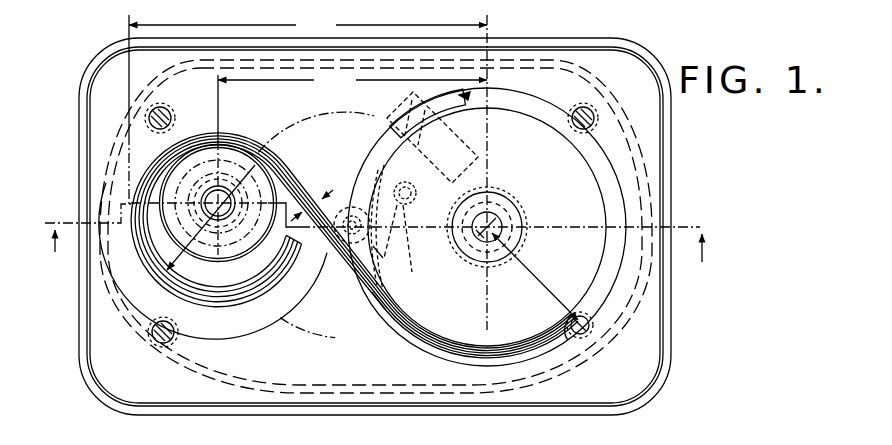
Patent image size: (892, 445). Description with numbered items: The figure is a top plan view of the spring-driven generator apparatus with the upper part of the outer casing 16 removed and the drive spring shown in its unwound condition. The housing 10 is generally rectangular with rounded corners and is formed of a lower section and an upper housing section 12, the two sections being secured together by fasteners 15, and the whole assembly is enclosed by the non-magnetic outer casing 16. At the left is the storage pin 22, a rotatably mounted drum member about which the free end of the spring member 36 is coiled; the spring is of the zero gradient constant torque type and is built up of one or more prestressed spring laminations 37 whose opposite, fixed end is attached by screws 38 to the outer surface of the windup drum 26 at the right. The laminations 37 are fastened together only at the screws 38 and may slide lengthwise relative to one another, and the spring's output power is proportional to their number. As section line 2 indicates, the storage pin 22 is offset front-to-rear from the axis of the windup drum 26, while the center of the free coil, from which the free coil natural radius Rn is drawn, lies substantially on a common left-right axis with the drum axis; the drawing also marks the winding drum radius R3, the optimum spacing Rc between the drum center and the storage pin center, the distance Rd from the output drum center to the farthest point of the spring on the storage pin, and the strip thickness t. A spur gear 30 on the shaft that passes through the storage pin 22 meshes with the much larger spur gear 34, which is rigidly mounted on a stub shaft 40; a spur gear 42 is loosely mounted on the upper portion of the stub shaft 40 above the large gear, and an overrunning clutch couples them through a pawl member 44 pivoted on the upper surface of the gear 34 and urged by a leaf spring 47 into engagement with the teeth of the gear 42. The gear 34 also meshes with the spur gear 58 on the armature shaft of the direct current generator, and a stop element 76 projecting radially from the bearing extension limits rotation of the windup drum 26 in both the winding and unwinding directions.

The housing 10 is at (100, 128).
The upper housing section 12 is at (98, 157).
The fasteners 15 is at (158, 113).
The outer casing 16 is at (76, 333).
The storage pin 22 is at (272, 184).
The windup drum 26 is at (398, 153).
The spur gear 30 is at (226, 248).
The second spur gear 34 is at (289, 323).
The spring member 36 is at (378, 302).
The spring laminations 37 is at (369, 262).
The screws 38 is at (568, 345).
The stub shaft 40 is at (318, 254).
The spur gear 42 is at (349, 205).
The pawl member 44 is at (407, 206).
The leaf spring 47 is at (399, 230).
The spur gear 58 is at (510, 219).
The stop element 76 is at (416, 117).
The section line 2— 2 is at (372, 252).
The distance from output drum center to farthest point of spring on storage pin Rd is at (308, 110).
The optimum spacing between center of winding drum and center of storage pin Rc is at (352, 172).
The free coil natural radius Rn is at (211, 222).
The winding drum radius R3 is at (535, 276).
The thickness t is at (314, 200).